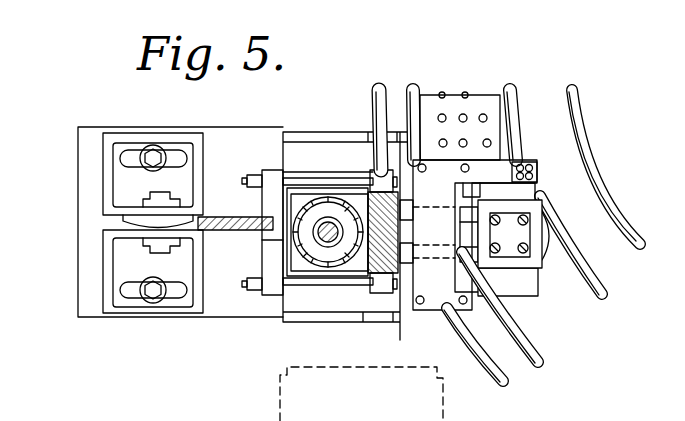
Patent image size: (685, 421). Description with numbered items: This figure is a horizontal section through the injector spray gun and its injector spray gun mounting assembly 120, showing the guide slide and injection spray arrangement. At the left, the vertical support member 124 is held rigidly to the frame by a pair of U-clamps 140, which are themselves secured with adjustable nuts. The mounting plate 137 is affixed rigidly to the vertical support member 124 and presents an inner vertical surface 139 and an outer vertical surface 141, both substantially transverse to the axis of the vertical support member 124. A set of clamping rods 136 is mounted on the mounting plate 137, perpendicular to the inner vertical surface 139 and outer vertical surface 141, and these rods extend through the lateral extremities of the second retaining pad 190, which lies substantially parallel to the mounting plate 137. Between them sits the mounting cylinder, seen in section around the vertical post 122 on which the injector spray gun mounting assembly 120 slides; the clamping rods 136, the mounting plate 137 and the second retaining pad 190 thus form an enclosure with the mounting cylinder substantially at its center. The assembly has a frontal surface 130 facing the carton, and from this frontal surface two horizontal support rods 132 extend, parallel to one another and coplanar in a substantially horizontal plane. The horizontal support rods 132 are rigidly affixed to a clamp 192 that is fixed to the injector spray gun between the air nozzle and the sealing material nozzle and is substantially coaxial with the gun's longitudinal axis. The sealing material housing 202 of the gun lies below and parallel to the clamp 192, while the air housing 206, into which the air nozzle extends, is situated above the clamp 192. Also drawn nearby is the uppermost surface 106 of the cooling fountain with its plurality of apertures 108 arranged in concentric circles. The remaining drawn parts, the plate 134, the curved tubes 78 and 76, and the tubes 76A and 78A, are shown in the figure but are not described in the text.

The U-clamps 140 is at (103, 187).
The vertical support member 124 is at (215, 215).
The mounting plate 137 is at (270, 262).
The outer vertical surface 141 is at (260, 242).
The injector spray gun mounting assembly 120 is at (300, 292).
The vertical post 122 is at (328, 216).
The clamping rods 136 is at (305, 177).
The inner vertical surface 139 is at (295, 177).
The frontal surface 130 is at (378, 238).
The second retaining pad 190 is at (373, 175).
The apertures 108 is at (466, 84).
The uppermost surface 106 is at (487, 96).
The plate 134 is at (433, 192).
The curved tube 78 is at (578, 127).
The tube 76 is at (603, 280).
The horizontal support rods 132 is at (549, 214).
The clamp 192 is at (542, 232).
The tube 76A is at (542, 358).
The tube 78A is at (507, 378).
The air housing 206 is at (512, 300).
The sealing material housing 202 is at (510, 315).